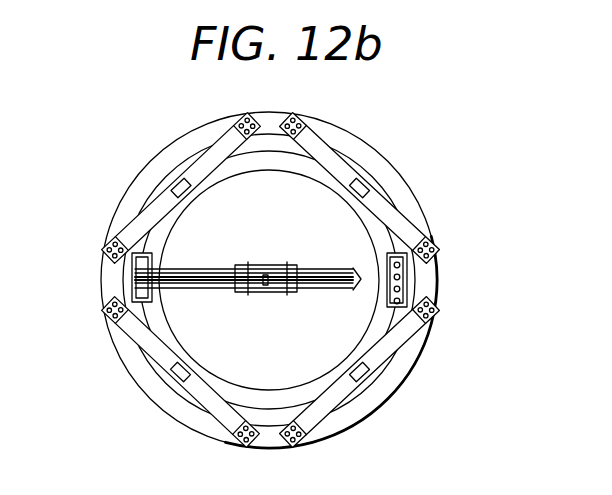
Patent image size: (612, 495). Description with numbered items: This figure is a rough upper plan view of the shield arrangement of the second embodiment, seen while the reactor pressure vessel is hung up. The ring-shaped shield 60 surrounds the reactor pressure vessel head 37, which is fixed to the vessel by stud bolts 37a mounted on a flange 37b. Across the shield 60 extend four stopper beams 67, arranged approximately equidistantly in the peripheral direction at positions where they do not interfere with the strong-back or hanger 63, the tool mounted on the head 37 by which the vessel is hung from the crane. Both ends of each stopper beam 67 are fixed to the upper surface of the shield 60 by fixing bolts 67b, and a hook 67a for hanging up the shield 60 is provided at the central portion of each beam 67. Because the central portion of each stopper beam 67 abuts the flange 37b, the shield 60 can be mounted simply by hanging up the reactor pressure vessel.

The shield 60 is at (143, 169).
The reactor pressure vessel head 37 is at (320, 192).
The stud bolts 37a is at (405, 278).
The flange 37b is at (323, 422).
The strong-back (hanger) 63 is at (330, 273).
The stopper beams 67 is at (403, 340).
The hook 67a is at (368, 382).
The fixing bolts 67b is at (437, 313).